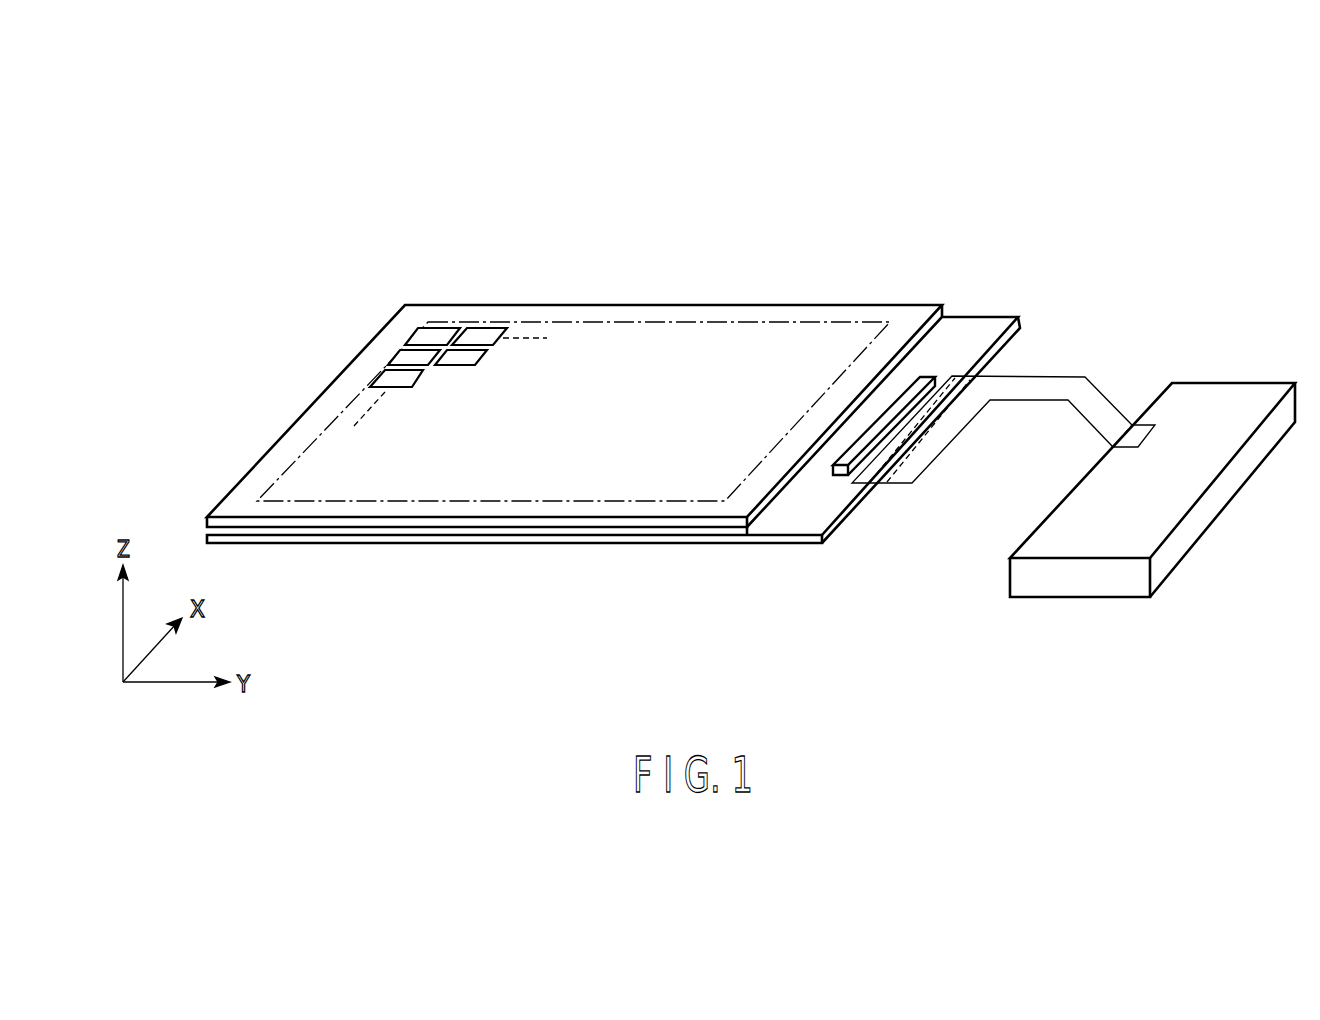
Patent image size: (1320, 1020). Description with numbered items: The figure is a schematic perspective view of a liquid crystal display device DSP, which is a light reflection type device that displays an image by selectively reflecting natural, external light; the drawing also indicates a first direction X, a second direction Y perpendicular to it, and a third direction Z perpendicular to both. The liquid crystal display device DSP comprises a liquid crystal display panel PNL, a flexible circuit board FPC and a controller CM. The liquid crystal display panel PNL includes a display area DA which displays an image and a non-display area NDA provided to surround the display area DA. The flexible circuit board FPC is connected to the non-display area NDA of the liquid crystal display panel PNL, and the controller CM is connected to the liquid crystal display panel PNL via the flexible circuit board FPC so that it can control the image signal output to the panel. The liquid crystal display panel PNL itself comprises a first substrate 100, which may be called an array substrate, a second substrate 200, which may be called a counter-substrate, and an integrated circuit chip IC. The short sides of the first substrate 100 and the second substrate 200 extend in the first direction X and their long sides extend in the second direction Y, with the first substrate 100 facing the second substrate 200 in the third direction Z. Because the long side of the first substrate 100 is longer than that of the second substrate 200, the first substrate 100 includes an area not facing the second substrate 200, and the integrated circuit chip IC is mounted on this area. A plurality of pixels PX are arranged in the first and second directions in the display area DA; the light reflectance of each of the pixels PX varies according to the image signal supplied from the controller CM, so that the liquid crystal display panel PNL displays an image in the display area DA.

The liquid crystal display device DSP is at (751, 357).
The liquid crystal display panel PNL is at (613, 433).
The second substrate 200 is at (574, 380).
The first substrate 100 is at (790, 543).
The display area DA is at (584, 320).
The non-display area NDA is at (662, 315).
The pixels PX is at (487, 328).
The integrated circuit chip IC is at (928, 375).
The flexible circuit board FPC is at (1038, 377).
The controller CM is at (1197, 382).